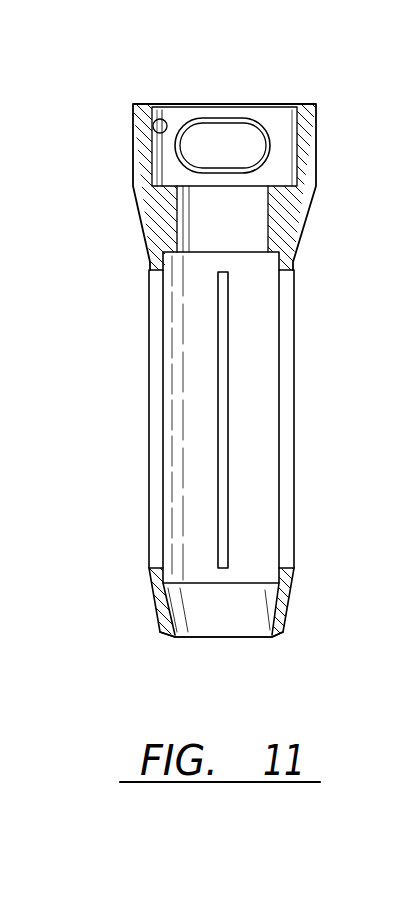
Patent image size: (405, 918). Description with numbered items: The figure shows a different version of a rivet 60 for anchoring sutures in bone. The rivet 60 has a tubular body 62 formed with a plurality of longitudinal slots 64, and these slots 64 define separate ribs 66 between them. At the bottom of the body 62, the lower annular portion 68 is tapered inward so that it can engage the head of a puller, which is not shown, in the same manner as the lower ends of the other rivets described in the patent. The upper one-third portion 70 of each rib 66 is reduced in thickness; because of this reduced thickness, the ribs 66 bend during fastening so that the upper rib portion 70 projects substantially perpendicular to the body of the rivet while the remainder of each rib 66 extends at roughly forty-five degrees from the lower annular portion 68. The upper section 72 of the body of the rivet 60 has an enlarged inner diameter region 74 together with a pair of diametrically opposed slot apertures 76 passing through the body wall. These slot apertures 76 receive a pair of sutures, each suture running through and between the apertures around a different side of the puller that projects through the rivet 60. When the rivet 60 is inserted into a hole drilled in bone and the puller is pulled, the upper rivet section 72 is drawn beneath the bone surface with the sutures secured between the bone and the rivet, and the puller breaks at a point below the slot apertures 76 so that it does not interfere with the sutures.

The rivet 60 is at (140, 408).
The body 62 is at (147, 462).
The longitudinal slots 64 is at (160, 500).
The ribs 66 is at (190, 382).
The lower annular portion 68 is at (283, 618).
The upper one-third portion 70 is at (305, 251).
The upper section 72 is at (132, 197).
The enlarged inner diameter region 74 is at (162, 132).
The slot apertures 76 is at (265, 150).